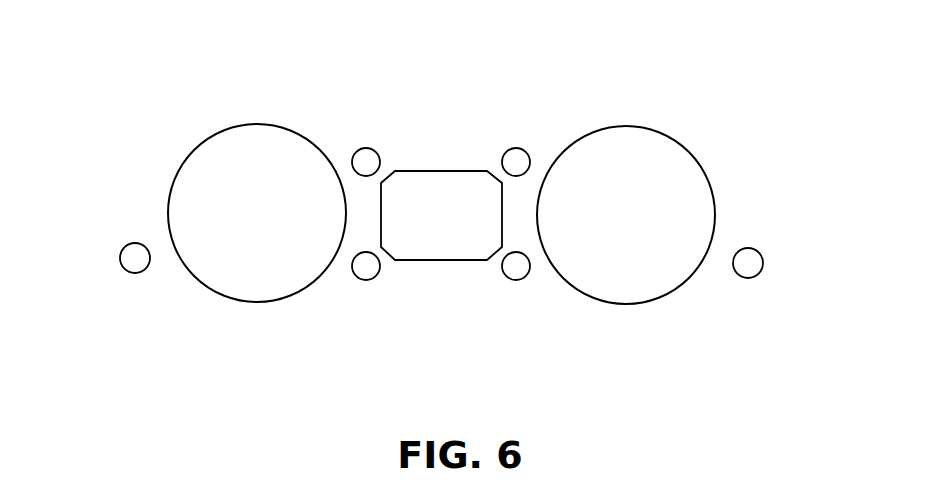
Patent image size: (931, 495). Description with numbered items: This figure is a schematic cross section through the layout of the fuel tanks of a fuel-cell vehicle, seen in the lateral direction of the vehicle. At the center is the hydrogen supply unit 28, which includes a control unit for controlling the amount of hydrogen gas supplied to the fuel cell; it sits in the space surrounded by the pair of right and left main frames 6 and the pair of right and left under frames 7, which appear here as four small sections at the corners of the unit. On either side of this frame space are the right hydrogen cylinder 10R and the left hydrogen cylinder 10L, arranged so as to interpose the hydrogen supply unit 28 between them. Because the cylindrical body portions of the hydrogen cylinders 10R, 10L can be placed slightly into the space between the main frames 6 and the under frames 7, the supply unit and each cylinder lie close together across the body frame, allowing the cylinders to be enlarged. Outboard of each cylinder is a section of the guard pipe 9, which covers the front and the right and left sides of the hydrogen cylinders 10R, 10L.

The main frames 6 is at (365, 152).
The under frames 7 is at (364, 274).
The guard pipe 9 is at (134, 264).
The right hydrogen cylinder 10R is at (210, 277).
The left hydrogen cylinder 10L is at (672, 282).
The hydrogen supply unit 28 is at (439, 170).